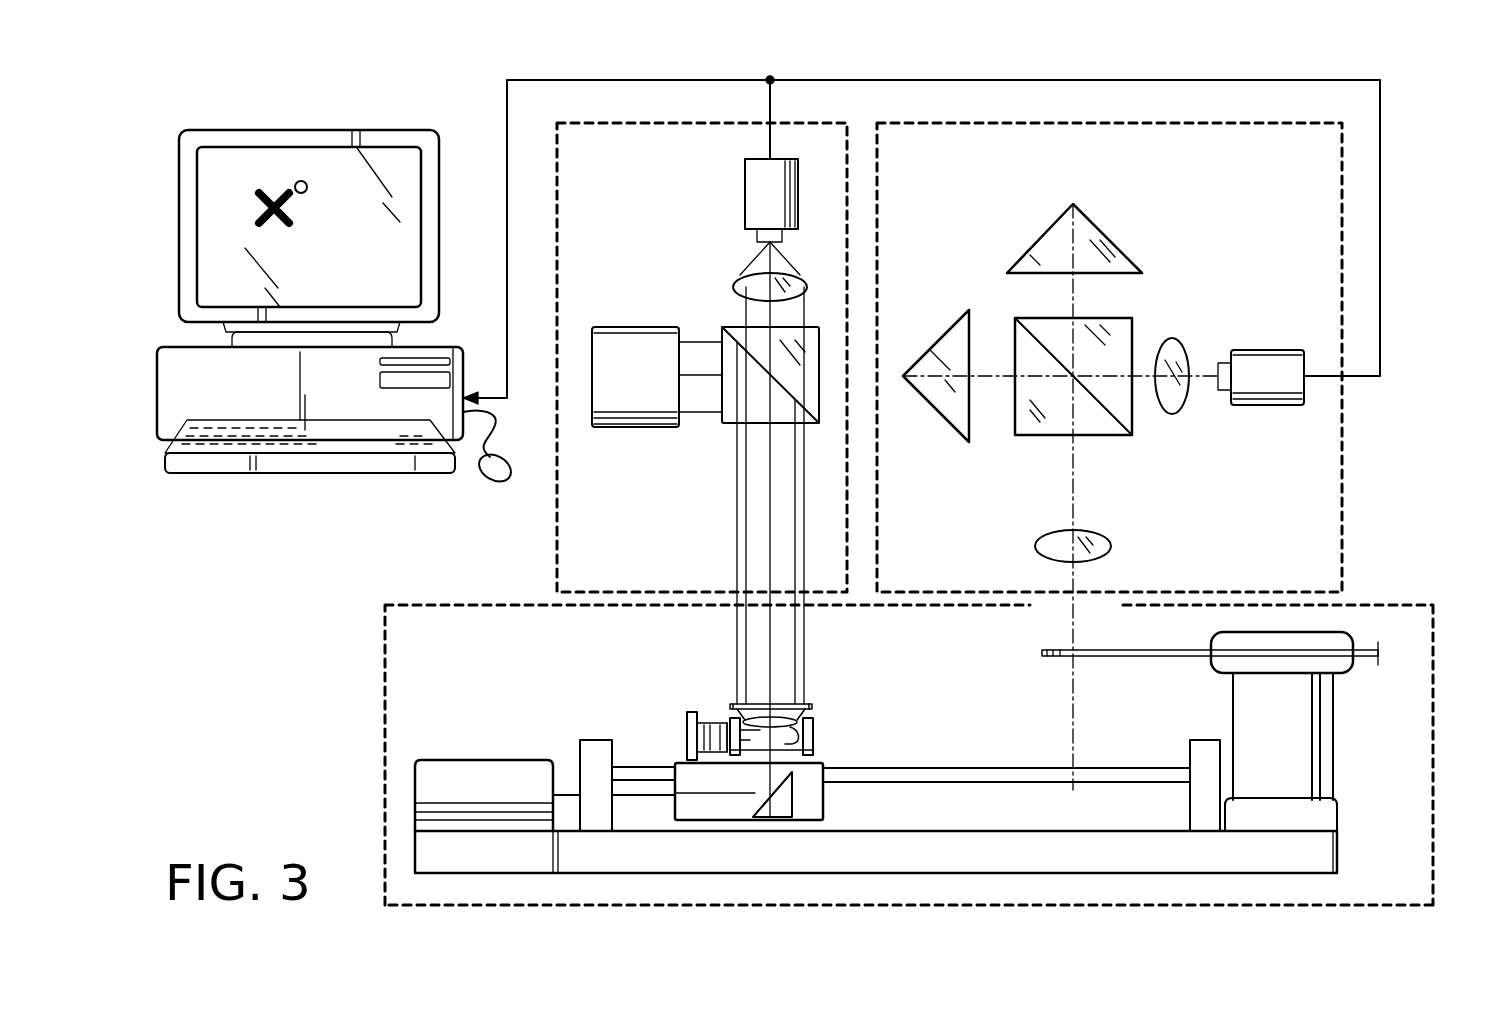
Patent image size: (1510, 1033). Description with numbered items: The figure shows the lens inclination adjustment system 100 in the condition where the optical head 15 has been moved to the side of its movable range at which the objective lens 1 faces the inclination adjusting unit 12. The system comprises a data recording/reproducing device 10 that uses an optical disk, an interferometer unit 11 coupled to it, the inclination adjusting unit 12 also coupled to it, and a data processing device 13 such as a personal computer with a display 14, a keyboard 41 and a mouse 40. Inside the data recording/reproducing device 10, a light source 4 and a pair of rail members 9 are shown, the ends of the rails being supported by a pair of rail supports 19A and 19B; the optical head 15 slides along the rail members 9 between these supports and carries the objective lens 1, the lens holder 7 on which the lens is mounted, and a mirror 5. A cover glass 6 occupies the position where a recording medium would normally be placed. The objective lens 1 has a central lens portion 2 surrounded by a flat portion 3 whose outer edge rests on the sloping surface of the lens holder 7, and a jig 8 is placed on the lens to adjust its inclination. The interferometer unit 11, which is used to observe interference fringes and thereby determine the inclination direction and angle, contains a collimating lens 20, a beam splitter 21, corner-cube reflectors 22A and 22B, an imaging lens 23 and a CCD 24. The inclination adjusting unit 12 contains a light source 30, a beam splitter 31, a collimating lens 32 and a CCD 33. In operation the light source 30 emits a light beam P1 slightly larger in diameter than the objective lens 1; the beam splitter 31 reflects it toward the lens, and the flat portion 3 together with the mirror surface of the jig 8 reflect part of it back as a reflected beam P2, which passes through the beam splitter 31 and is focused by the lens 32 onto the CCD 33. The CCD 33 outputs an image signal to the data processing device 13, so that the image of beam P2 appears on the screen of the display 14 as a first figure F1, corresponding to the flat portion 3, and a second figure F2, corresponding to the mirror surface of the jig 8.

The objective lens 1 is at (728, 698).
The lens portion 2 is at (783, 719).
The flat portion 3 is at (786, 732).
The light source 4 is at (478, 767).
The mirror 5 is at (808, 808).
The cover glass 6 is at (1160, 648).
The lens holder 7 is at (812, 728).
The jig 8 is at (788, 705).
The rail members 9 is at (1110, 768).
The data recording/reproducing device 10 is at (1433, 727).
The interferometer unit 11 is at (1342, 485).
The inclination adjusting unit 12 is at (557, 556).
The data processing device 13 is at (443, 343).
The display 14 is at (413, 105).
The optical head 15 is at (684, 720).
The rail support 19A is at (593, 740).
The rail support 19B is at (1210, 710).
The collimating lens 20 is at (1108, 540).
The beam splitter 21 is at (1035, 438).
The corner-cube reflector 22A is at (938, 333).
The corner-cube reflector 22B is at (1137, 220).
The imaging lens 23 is at (1202, 318).
The CCD 24 is at (1283, 330).
The light source 30 is at (635, 327).
The beam splitter 31 is at (722, 420).
The collimating lens 32 is at (743, 280).
The CCD 33 is at (747, 193).
The mouse 40 is at (487, 480).
The keyboard 41 is at (295, 473).
The inclination adjustment system 100 is at (300, 660).
The first figure F1 is at (268, 198).
The second figure F2 is at (298, 181).
The light beam P1 is at (701, 327).
The reflected beam P2 is at (818, 312).